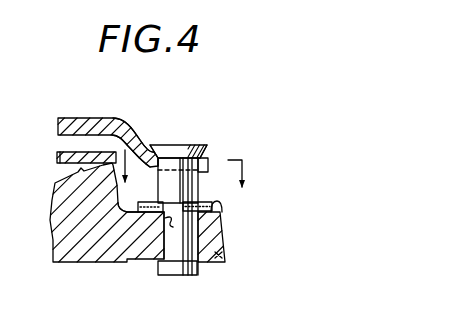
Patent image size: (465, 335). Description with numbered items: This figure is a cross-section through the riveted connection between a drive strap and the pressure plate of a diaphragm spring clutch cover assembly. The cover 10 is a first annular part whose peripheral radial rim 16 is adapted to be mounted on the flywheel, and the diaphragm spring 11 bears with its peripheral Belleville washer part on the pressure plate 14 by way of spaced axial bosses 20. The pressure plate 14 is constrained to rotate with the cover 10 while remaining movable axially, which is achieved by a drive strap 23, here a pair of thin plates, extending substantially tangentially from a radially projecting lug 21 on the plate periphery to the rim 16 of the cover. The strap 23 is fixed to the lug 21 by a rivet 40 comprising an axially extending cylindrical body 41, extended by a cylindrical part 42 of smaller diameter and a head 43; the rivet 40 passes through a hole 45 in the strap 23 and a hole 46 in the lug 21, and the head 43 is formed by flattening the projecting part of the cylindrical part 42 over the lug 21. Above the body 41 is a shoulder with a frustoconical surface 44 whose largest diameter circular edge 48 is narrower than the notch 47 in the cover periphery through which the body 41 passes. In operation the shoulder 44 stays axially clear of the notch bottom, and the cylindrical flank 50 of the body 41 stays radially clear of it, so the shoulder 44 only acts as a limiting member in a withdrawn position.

The cover 10 is at (56, 118).
The diaphragm spring 11 is at (55, 157).
The pressure plate 14 is at (50, 242).
The peripheral radial rim 16 is at (223, 155).
The axial boss 20 is at (115, 152).
The lug 21 is at (220, 258).
The drive strap 23 is at (135, 217).
The rivet 40 is at (200, 140).
The cylindrical body 41 is at (197, 143).
The cylindrical part 42 is at (218, 237).
The head 43 is at (158, 271).
The frustoconical shoulder 44 is at (211, 162).
The hole in strap 45 is at (178, 180).
The hole in lug 46 is at (153, 214).
The notch 47 is at (165, 143).
The largest diameter circular edge 48 is at (206, 145).
The cylindrical flank 50 is at (222, 216).